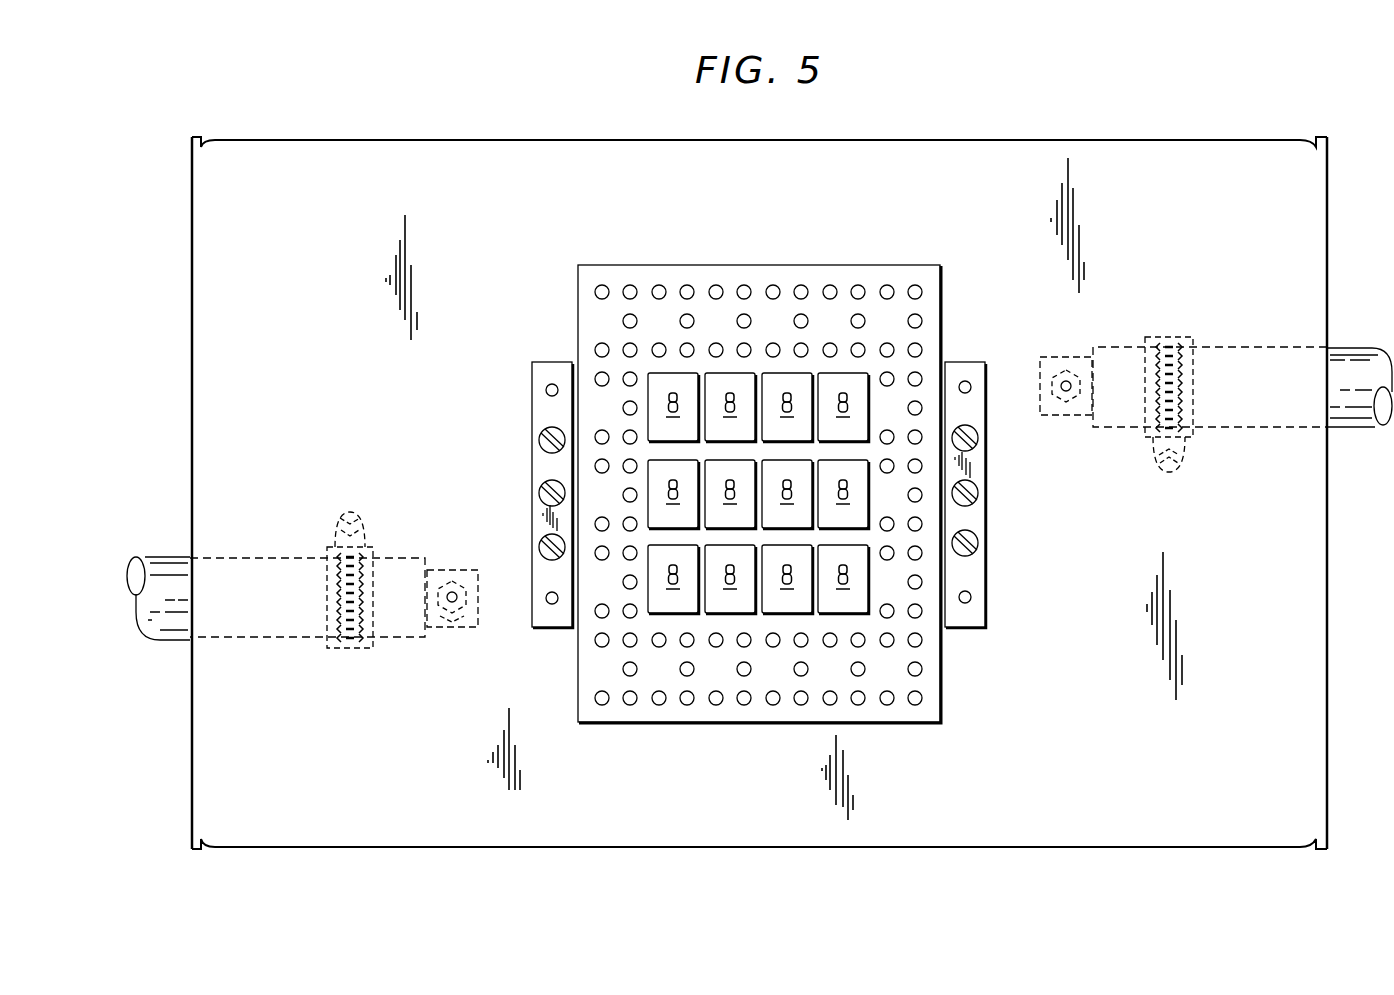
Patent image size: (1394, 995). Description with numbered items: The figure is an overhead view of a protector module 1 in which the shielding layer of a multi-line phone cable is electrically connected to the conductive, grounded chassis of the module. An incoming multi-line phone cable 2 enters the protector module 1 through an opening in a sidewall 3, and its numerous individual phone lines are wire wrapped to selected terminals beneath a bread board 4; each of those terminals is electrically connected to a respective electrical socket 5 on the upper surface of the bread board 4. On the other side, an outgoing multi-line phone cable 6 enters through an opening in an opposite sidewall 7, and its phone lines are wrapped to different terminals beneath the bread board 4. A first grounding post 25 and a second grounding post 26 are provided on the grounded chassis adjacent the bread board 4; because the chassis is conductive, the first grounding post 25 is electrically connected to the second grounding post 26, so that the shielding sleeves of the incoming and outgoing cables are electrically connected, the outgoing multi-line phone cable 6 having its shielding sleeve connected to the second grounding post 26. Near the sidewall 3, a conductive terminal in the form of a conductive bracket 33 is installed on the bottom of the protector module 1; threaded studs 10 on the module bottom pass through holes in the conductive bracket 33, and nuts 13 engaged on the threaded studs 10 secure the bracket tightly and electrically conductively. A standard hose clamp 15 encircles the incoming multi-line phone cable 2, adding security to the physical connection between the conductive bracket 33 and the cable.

The protector module 1 is at (1016, 856).
The incoming multi-line phone cable 2 is at (155, 557).
The sidewall 3 is at (193, 779).
The bread board 4 is at (787, 482).
The electrical socket 5 is at (923, 321).
The outgoing multi-line phone cable 6 is at (1348, 347).
The opposite sidewall 7 is at (1326, 587).
The threaded studs 10 is at (482, 623).
The nuts 13 is at (452, 589).
The hose clamp 15 is at (326, 549).
The first grounding post 25 is at (544, 411).
The second grounding post 26 is at (970, 570).
The conductive bracket 33 is at (446, 628).